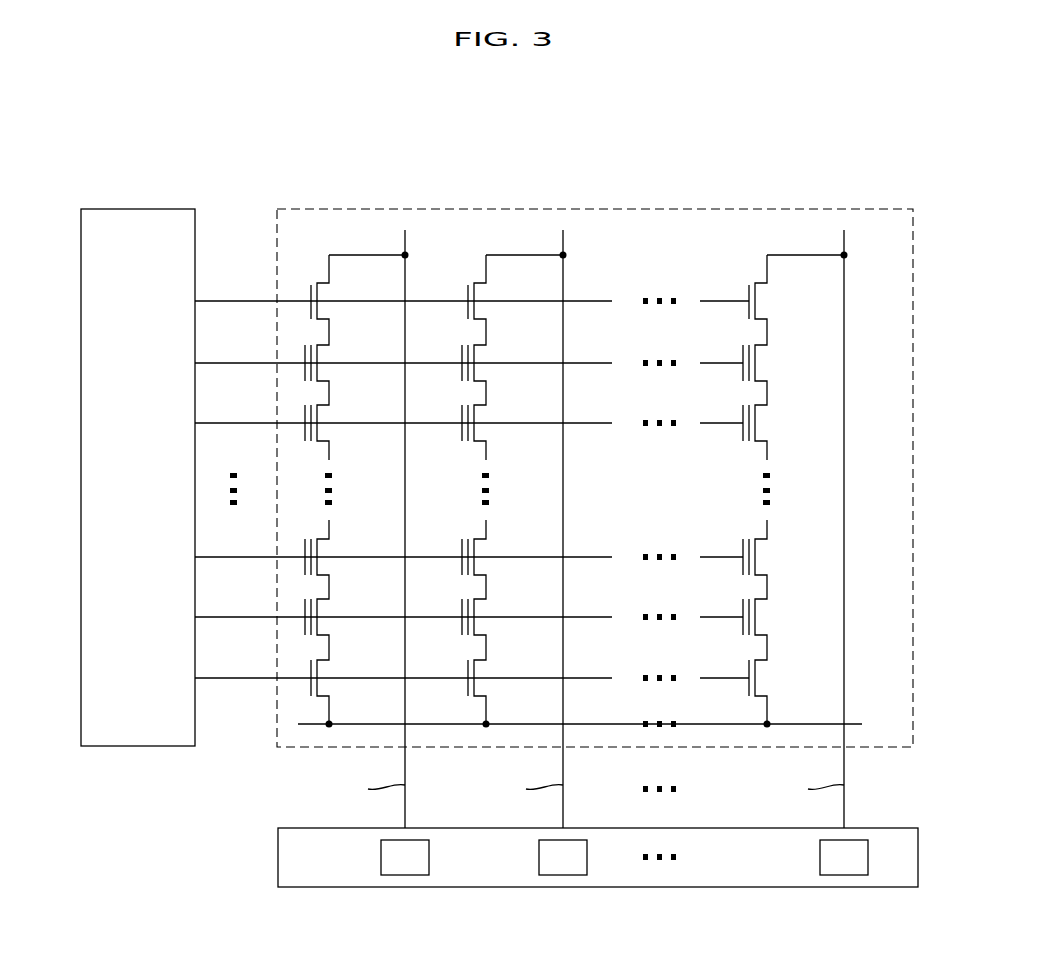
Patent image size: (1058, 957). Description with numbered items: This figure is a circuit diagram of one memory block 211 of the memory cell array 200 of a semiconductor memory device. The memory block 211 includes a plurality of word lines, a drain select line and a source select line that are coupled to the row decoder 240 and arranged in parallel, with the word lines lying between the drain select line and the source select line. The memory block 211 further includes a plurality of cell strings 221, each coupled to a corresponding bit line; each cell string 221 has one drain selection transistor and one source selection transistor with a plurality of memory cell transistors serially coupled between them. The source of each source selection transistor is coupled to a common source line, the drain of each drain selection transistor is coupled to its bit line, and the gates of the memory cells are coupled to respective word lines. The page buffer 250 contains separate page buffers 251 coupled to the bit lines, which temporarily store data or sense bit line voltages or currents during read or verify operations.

The memory cell array 200 is at (889, 113).
The memory block 211 is at (807, 207).
The cell string 221 is at (313, 262).
The row decoder 240 is at (137, 207).
The page buffer 250 is at (564, 857).
The page buffer PB 251 is at (381, 857).